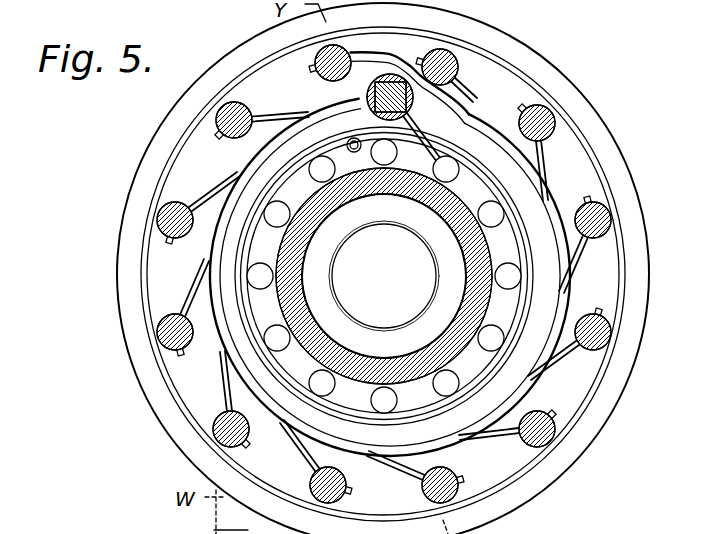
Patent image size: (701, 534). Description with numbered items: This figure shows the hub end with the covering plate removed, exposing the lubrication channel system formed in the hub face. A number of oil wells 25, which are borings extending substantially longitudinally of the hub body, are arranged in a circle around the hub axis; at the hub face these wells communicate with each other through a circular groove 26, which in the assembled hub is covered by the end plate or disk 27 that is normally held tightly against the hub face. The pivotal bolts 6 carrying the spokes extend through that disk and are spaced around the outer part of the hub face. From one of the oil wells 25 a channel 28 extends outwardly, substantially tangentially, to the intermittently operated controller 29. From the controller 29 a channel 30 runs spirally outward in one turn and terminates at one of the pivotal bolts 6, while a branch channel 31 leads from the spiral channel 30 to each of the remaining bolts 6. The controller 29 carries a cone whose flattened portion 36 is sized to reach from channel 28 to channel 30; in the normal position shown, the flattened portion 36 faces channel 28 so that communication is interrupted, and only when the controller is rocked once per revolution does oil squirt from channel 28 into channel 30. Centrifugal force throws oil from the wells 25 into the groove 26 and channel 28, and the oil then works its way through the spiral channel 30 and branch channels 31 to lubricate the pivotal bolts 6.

The pivotal bolts 6 is at (344, 58).
The oil wells 25 is at (449, 171).
The circular grooves 26 is at (351, 397).
The end plate or disk 27 is at (204, 524).
The channel 28 is at (432, 127).
The intermittently operated controller 29 is at (367, 90).
The spiral channel 30 is at (253, 161).
The branch channels 31 is at (292, 100).
The flattened portion 36 is at (411, 108).